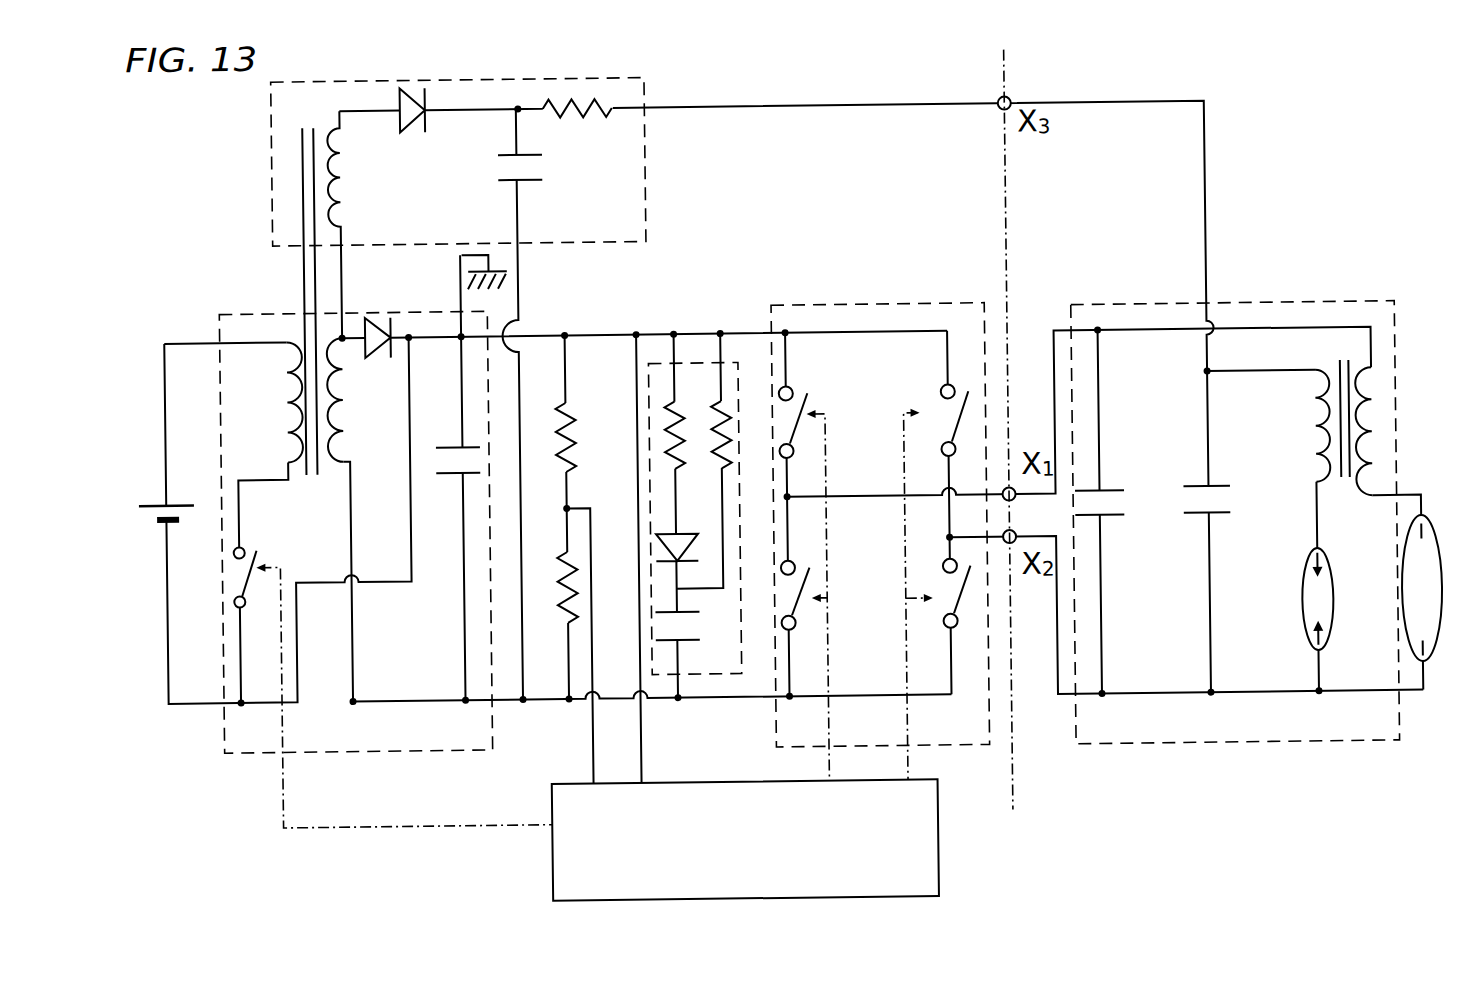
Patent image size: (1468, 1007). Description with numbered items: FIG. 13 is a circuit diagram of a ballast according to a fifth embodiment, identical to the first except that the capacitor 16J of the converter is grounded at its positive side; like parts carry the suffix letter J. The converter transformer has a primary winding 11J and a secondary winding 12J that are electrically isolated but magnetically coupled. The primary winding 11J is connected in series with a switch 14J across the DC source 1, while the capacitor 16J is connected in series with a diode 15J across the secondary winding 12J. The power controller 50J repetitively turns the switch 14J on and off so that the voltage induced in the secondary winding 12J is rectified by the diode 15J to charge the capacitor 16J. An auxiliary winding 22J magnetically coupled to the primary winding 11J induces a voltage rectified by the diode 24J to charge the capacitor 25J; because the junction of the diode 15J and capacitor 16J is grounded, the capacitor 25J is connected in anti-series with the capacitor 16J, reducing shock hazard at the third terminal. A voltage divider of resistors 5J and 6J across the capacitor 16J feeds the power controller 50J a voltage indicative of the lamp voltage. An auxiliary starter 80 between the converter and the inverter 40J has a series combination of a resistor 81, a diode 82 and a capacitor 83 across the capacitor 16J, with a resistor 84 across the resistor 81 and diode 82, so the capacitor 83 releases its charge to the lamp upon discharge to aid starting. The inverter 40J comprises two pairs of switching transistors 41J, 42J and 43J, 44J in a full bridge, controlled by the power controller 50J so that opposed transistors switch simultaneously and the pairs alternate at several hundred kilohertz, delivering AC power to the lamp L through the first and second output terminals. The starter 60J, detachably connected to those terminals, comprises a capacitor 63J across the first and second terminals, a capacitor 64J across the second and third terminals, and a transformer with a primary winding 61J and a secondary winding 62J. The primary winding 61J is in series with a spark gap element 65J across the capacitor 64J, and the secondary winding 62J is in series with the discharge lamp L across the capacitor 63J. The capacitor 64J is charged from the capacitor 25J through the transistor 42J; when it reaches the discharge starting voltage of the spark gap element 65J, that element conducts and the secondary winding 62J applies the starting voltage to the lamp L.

The DC source 1 is at (144, 504).
The primary winding 11J is at (278, 364).
The secondary winding 12J is at (344, 364).
The switch 14J is at (228, 571).
The diode 15J is at (374, 308).
The capacitor 16J is at (430, 464).
The auxiliary winding 22J is at (346, 158).
The diode 24J is at (412, 133).
The capacitor 25J is at (548, 160).
The resistor 5J is at (579, 434).
The resistor 6J is at (543, 578).
The auxiliary starter 80 is at (662, 340).
The resistor 81 is at (665, 407).
The diode 82 is at (658, 549).
The capacitor 83 is at (701, 623).
The resistor 84 is at (718, 407).
The inverter 40J is at (856, 294).
The switching transistor 41J is at (820, 403).
The switching transistor 42J is at (936, 604).
The switching transistor 43J is at (924, 404).
The switching transistor 44J is at (808, 623).
The power controller 50J is at (934, 810).
The starter 60J is at (1243, 297).
The primary winding 61J is at (1307, 433).
The secondary winding 62J is at (1374, 414).
The capacitor 63J is at (1126, 506).
The capacitor 64J is at (1183, 509).
The spark gap element 65J is at (1292, 582).
The discharge lamp L is at (1416, 576).